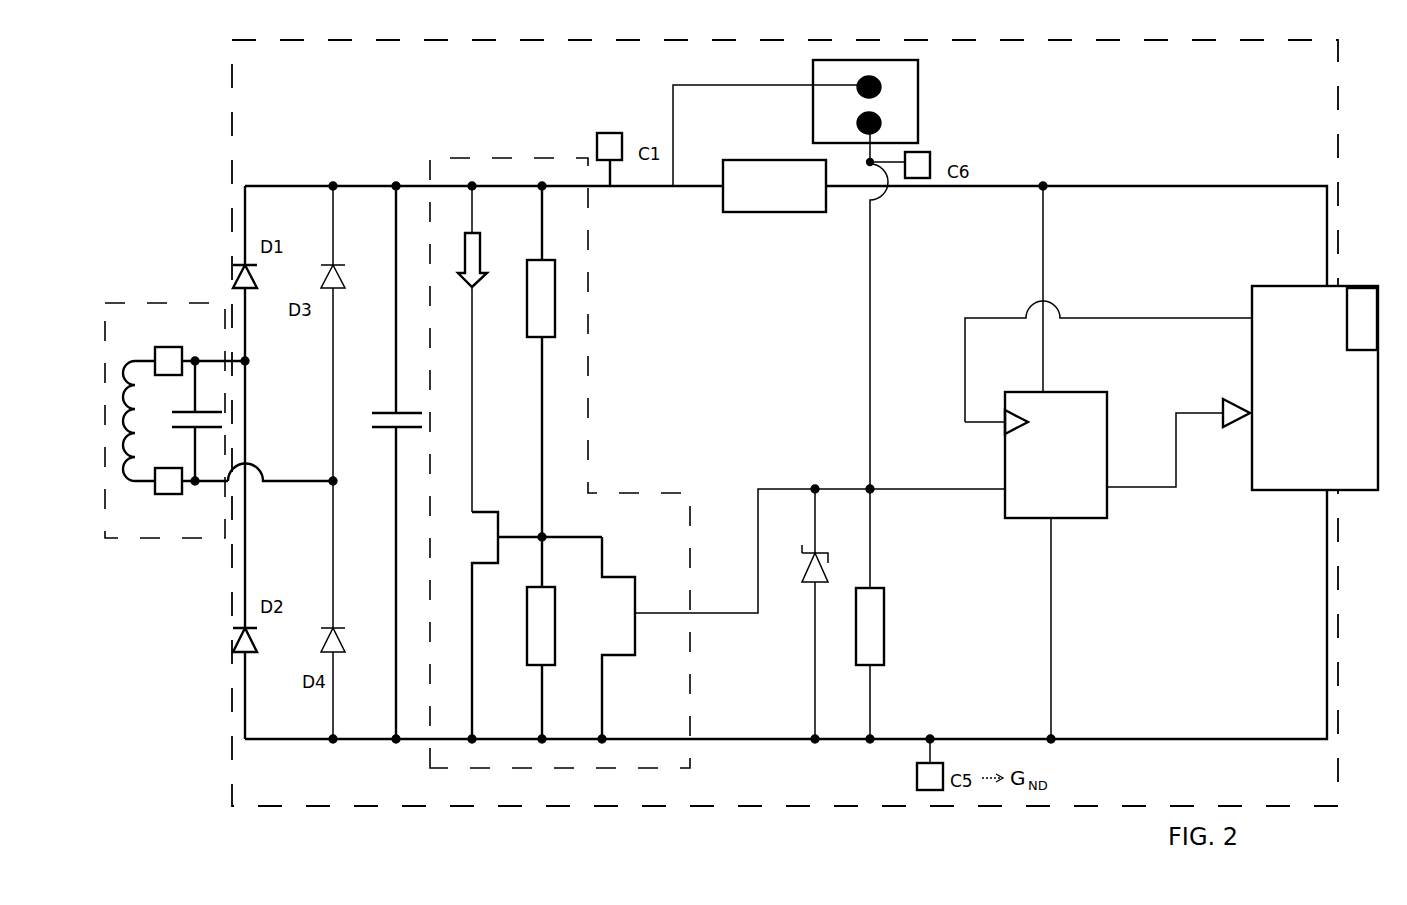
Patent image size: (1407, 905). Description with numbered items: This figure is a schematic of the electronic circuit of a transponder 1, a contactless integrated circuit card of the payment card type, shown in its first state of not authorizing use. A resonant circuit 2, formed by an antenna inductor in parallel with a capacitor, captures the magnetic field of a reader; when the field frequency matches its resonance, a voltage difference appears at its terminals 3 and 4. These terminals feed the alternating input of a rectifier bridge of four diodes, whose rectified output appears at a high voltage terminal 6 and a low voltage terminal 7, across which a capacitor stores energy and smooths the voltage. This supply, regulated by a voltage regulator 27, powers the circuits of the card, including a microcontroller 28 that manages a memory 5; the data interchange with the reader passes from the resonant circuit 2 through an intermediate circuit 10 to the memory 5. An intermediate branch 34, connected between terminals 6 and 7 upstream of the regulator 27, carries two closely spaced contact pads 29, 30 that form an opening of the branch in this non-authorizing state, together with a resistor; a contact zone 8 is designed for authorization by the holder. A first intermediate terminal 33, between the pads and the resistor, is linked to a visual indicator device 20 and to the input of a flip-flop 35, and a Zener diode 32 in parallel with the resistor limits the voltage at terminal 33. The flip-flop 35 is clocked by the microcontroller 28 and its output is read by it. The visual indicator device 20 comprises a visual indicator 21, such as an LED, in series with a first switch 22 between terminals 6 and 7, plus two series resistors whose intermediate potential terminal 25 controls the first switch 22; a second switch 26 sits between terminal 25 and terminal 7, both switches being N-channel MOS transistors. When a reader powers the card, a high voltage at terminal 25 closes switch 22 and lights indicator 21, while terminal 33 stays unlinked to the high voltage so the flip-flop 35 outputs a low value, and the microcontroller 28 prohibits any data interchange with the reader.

The transponder 1 is at (205, 75).
The resonant circuit 2 is at (192, 540).
The terminal of the resonant circuit 3 is at (227, 358).
The terminal of the resonant circuit 4 is at (224, 478).
The memory 5 is at (1365, 303).
The high voltage terminal 6 is at (400, 183).
The low voltage terminal 7 is at (402, 743).
The contact zone 8 is at (822, 93).
The intermediate circuit 10 is at (260, 160).
The visual indicator device 20 is at (508, 175).
The visual indicator 21 is at (463, 253).
The first switch 22 is at (490, 549).
The intermediate potential terminal 25 is at (545, 535).
The second switch 26 is at (628, 615).
The voltage regulator 27 is at (777, 212).
The microcontroller 28 is at (1290, 490).
The contact pad 29 is at (882, 84).
The contact pad 30 is at (882, 122).
The Zener diode 32 is at (793, 562).
The first intermediate terminal 33 is at (868, 488).
The intermediate branch 34 is at (873, 293).
The flip-flop 35 is at (1063, 510).